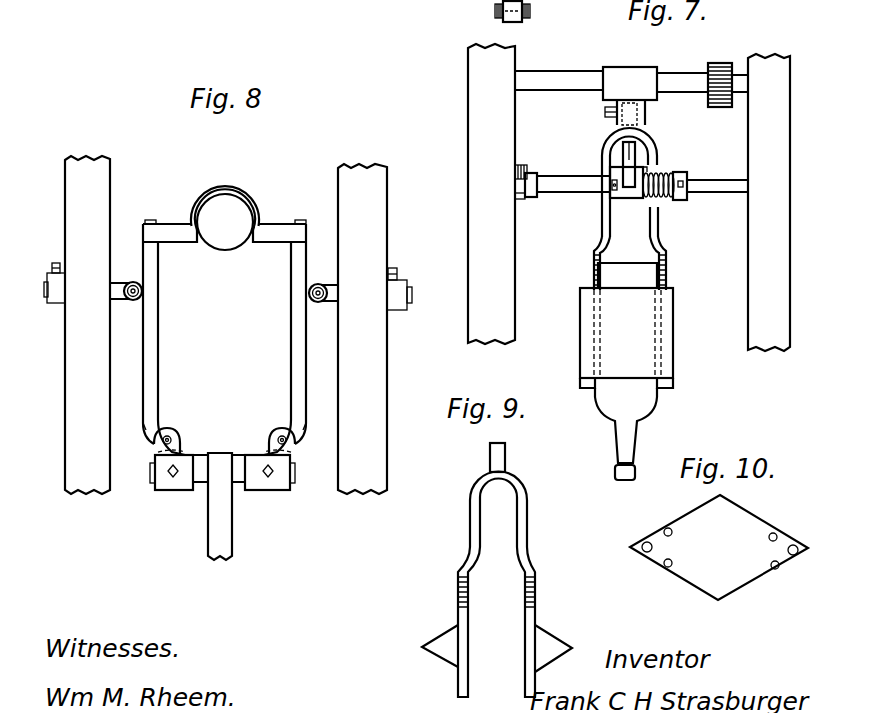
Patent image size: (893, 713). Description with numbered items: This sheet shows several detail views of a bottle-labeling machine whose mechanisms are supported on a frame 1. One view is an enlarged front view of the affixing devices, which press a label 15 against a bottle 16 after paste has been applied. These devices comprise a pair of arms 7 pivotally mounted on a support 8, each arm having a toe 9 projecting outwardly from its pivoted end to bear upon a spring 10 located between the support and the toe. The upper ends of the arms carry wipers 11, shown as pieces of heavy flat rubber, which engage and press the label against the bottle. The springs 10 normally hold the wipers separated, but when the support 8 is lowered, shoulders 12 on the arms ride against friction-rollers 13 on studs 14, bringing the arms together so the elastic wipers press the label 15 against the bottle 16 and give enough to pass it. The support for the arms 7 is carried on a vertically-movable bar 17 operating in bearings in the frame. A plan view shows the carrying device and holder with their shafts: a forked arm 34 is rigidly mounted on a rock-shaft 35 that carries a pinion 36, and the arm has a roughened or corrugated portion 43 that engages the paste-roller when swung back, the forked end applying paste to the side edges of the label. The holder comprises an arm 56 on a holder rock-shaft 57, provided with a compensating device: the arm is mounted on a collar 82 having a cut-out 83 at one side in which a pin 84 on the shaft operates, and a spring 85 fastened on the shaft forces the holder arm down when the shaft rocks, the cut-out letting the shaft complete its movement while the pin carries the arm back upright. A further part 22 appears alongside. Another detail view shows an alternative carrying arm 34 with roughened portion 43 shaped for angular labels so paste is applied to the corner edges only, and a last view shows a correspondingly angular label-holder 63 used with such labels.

In FIG. 8, the frame 1 is at (228, 325).
In FIG. 7, the frame 1 is at (629, 197).
In FIG. 8, the arms 7 is at (224, 348).
In FIG. 8, the support 8 is at (200, 488).
In FIG. 8, the toe 9 is at (181, 443).
In FIG. 8, the spring 10 is at (258, 455).
In FIG. 8, the wipers 11 is at (192, 222).
In FIG. 8, the shoulders 12 is at (145, 431).
In FIG. 8, the friction-rollers 13 is at (132, 281).
In FIG. 8, the studs 14 is at (119, 301).
In FIG. 8, the label 15 is at (230, 194).
In FIG. 7, the label 15 is at (626, 325).
In FIG. 8, the bottle 16 is at (225, 222).
In FIG. 7, the bottle 16 is at (626, 433).
In FIG. 8, the vertically-movable bar 17 is at (233, 530).
In FIG. 7, the coupling 22 is at (530, 9).
In FIG. 7, the forked arm 34 is at (657, 239).
In FIG. 9, the forked arm 34 is at (523, 541).
In FIG. 7, the rock-shaft 35 is at (560, 73).
In FIG. 7, the pinion 36 is at (718, 63).
In FIG. 7, the roughened portion 43 is at (667, 266).
In FIG. 9, the roughened portion 43 is at (527, 584).
In FIG. 7, the holder arm 56 is at (634, 165).
In FIG. 7, the holder rock-shaft 57 is at (560, 176).
In FIG. 10, the label-holder 63 is at (755, 524).
In FIG. 7, the collar 82 is at (633, 198).
In FIG. 7, the cut-out 83 is at (614, 188).
In FIG. 7, the pin 84 is at (610, 179).
In FIG. 7, the spring 85 is at (668, 196).